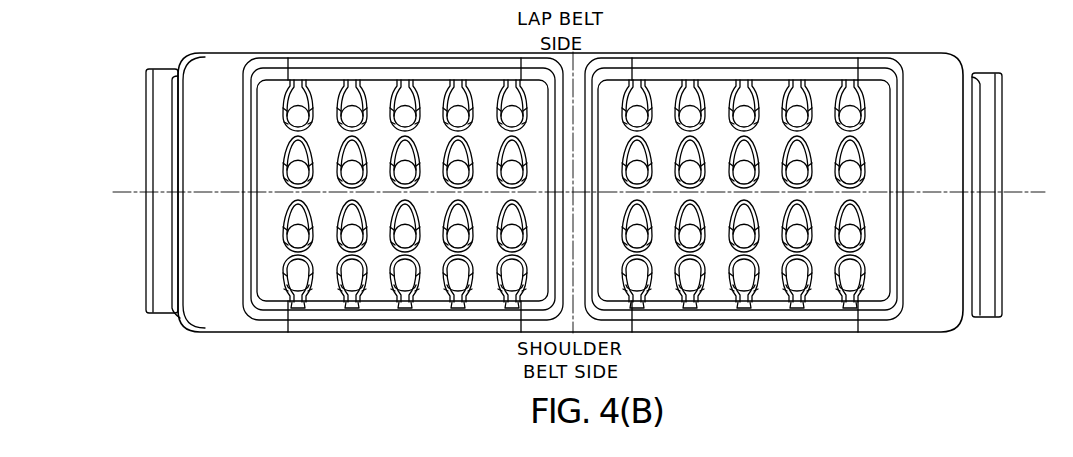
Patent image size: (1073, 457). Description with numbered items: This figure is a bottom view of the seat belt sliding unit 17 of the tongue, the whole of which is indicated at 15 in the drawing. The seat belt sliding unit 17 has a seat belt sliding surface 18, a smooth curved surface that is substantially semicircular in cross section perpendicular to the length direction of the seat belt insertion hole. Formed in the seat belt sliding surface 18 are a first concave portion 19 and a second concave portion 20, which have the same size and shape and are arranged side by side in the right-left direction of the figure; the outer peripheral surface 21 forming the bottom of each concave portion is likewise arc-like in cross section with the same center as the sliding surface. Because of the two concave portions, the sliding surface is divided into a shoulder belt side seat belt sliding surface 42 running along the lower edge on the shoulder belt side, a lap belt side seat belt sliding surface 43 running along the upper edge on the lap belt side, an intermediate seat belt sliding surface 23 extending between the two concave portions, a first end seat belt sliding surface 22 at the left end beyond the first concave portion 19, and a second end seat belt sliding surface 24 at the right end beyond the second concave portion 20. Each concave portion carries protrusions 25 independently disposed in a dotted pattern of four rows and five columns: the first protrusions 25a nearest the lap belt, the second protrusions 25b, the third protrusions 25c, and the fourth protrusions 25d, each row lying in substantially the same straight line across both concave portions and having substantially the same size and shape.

The buckle body 15 is at (964, 38).
The seat belt sliding unit 17 is at (378, 97).
The seat belt sliding surface 18 is at (196, 152).
The first concave portion 19 is at (386, 296).
The second concave portion 20 is at (771, 96).
The outer peripheral surface 21 is at (425, 100).
The first end seat belt sliding surface 22 is at (202, 250).
The intermediate seat belt sliding surface 23 is at (578, 125).
The second end seat belt sliding surface 24 is at (957, 167).
The protrusions 25 is at (444, 308).
The first protrusions 25a is at (348, 112).
The second protrusions 25b is at (347, 166).
The third protrusions 25c is at (347, 233).
The fourth protrusions 25d is at (347, 282).
The shoulder belt side seat belt sliding surface 42 is at (752, 336).
The lap belt side seat belt sliding surface 43 is at (733, 56).